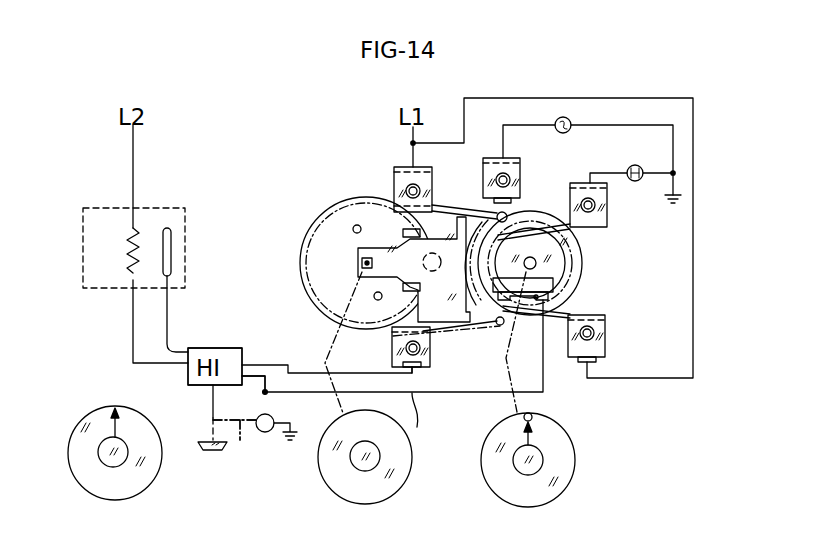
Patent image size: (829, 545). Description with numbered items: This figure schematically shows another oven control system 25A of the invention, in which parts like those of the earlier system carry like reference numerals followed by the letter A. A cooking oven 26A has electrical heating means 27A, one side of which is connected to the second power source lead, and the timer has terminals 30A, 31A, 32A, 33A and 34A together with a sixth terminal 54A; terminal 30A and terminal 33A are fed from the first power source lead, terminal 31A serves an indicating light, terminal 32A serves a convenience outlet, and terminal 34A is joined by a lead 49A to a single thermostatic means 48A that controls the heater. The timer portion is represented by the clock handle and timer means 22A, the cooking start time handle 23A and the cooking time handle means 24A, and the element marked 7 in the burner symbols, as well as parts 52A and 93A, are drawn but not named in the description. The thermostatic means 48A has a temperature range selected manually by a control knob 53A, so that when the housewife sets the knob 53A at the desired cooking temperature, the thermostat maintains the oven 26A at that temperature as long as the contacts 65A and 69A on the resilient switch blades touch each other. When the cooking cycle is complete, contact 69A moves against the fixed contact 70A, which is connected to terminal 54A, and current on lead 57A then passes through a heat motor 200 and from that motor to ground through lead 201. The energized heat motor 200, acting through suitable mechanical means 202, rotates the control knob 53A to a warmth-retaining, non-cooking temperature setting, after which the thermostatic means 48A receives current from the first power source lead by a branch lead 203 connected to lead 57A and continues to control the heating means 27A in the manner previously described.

The burner flame port 7 is at (106, 466).
The clock handle and timer means 22A is at (118, 465).
The cooking start time handle 23A is at (372, 468).
The cooking time handle means 24A is at (528, 472).
The system 25A is at (244, 170).
The cooking oven 26A is at (88, 208).
The heating means 27A is at (138, 240).
The terminal 30A is at (394, 182).
The terminal 31A is at (520, 172).
The terminal 32A is at (605, 200).
The terminal 33A is at (605, 329).
The terminal 34A is at (418, 368).
The thermostatic means 48A is at (222, 346).
The lead 49A is at (376, 359).
The thermostat bulb 52A is at (172, 245).
The control knob 53A is at (215, 452).
The terminal 54A is at (555, 288).
The lead 57A is at (438, 421).
The contact means 65A is at (500, 326).
The contact means 69A is at (470, 336).
The fixed contact means 70A is at (537, 266).
The bracket 93A is at (431, 243).
The heat motor 200 is at (268, 432).
The lead 201 is at (302, 421).
The mechanical means 202 is at (242, 447).
The branch lead 203 is at (255, 375).